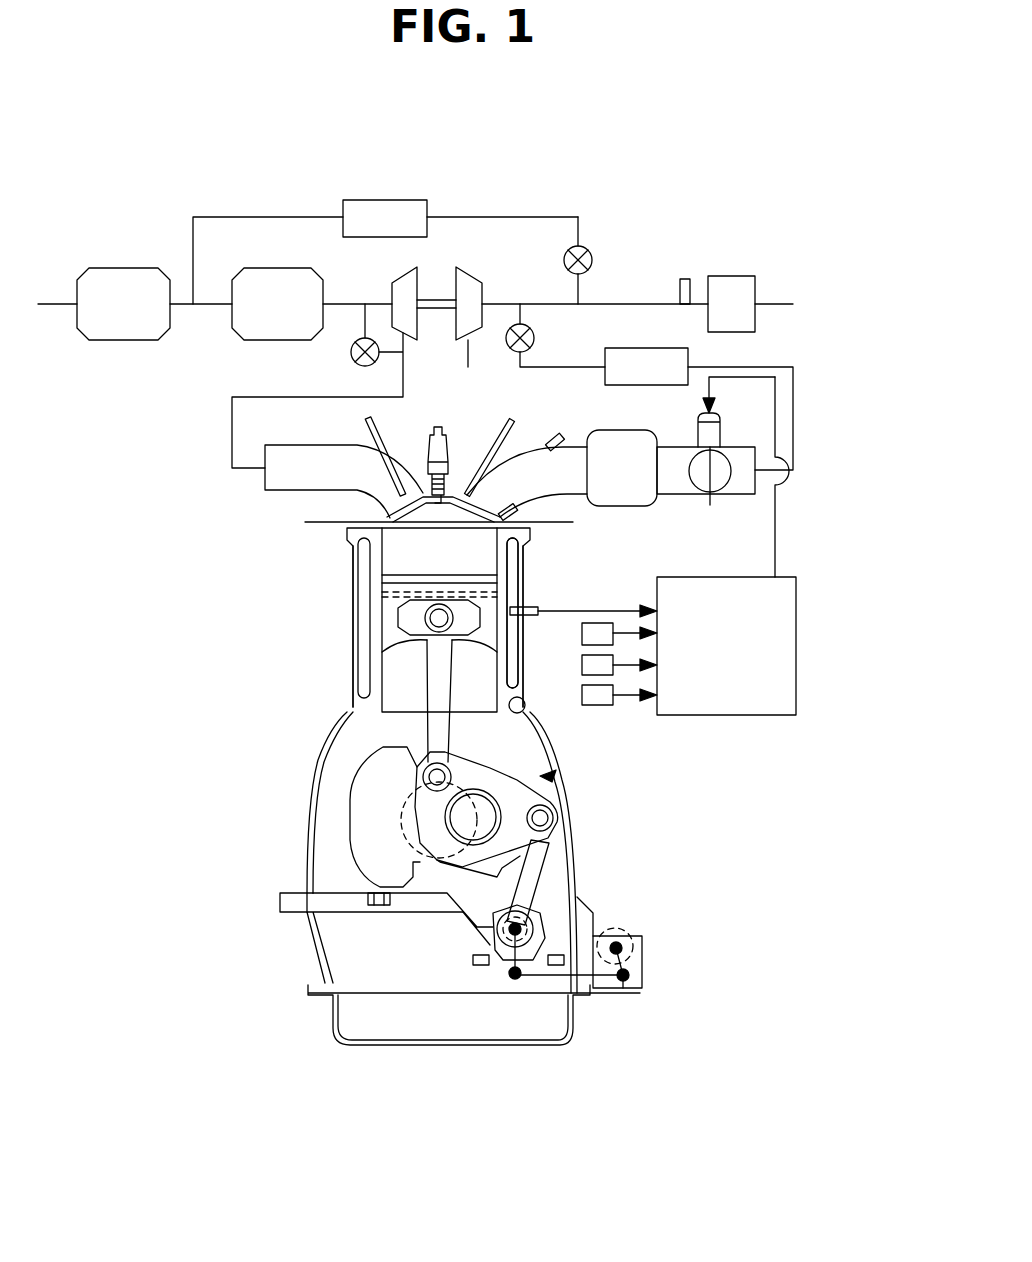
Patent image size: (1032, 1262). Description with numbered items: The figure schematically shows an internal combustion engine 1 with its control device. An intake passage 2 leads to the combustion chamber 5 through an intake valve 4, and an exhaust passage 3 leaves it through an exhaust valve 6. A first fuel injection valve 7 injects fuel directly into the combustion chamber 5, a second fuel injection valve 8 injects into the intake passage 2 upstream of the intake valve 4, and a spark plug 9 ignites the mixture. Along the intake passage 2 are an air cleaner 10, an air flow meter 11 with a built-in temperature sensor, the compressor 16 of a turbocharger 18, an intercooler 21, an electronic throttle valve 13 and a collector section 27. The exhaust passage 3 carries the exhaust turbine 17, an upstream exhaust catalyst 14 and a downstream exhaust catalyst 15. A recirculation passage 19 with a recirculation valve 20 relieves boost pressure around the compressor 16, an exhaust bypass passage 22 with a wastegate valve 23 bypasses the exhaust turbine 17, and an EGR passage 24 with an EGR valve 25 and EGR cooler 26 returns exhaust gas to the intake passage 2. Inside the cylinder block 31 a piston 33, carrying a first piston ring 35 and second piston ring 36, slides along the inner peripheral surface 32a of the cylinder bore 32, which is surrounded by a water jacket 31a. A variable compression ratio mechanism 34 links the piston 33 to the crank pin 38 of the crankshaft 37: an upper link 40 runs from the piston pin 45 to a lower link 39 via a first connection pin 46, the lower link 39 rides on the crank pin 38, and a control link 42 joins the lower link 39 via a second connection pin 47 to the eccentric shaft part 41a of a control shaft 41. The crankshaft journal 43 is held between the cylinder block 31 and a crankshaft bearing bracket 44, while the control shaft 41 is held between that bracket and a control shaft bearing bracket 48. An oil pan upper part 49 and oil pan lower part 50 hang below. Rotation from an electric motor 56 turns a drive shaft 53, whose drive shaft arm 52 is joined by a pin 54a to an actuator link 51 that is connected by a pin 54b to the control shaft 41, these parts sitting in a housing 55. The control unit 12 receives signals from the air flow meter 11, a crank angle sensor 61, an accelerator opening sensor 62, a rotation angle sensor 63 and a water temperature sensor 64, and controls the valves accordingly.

The internal combustion engine 1 is at (232, 676).
The intake passage 2 is at (568, 490).
The exhaust passage 3 is at (275, 490).
The intake valve 4 is at (516, 418).
The combustion chamber 5 is at (377, 552).
The exhaust valve 6 is at (372, 420).
The first fuel injection valve 7 is at (520, 520).
The second fuel injection valve 8 is at (560, 437).
The spark plug 9 is at (447, 430).
The air cleaner 10 is at (733, 276).
The air flow meter 11 is at (685, 279).
The control unit 12 is at (780, 577).
The throttle valve 13 is at (720, 452).
The upstream exhaust catalyst 14 is at (278, 268).
The downstream exhaust catalyst 15 is at (106, 268).
The compressor 16 is at (468, 283).
The exhaust turbine 17 is at (420, 280).
The turbocharger 18 is at (481, 252).
The recirculation passage 19 is at (528, 312).
The recirculation valve 20 is at (536, 340).
The intercooler 21 is at (645, 348).
The exhaust bypass passage 22 is at (358, 312).
The wastegate valve 23 is at (352, 362).
The EGR passage 24 is at (303, 217).
The EGR valve 25 is at (586, 247).
The EGR cooler 26 is at (385, 200).
The collector section 27 is at (625, 500).
The cylinder block 31 is at (403, 805).
The water jacket 31a is at (442, 688).
The cylinder bore 32 is at (385, 692).
The inner peripheral surface 32a is at (385, 668).
The piston 33 is at (385, 628).
The variable compression ratio mechanism 34 is at (552, 777).
The first piston ring 35 is at (400, 578).
The second piston ring 36 is at (385, 595).
The crankshaft 37 is at (400, 797).
The crank pin 38 is at (457, 817).
The lower link 39 is at (565, 795).
The upper link 40 is at (400, 715).
The control shaft 41 is at (495, 958).
The eccentric shaft part 41a is at (522, 945).
The control link 42 is at (540, 870).
The journal 43 is at (345, 860).
The crankshaft bearing bracket 44 is at (365, 905).
The piston pin 45 is at (425, 618).
The first connection pin 46 is at (428, 768).
The second connection pin 47 is at (555, 818).
The control shaft bearing bracket 48 is at (477, 948).
The oil pan upper part 49 is at (303, 928).
The oil pan lower part 50 is at (335, 1040).
The actuator link 51 is at (568, 995).
The drive shaft arm 52 is at (629, 975).
The drive shaft 53 is at (622, 948).
The pin 54a is at (623, 990).
The pin 54b is at (515, 980).
The housing 55 is at (642, 975).
The electric motor 56 is at (625, 930).
The crank angle sensor 61 is at (597, 705).
The accelerator opening sensor 62 is at (534, 702).
The rotation angle sensor 63 is at (505, 690).
The water temperature sensor 64 is at (540, 610).